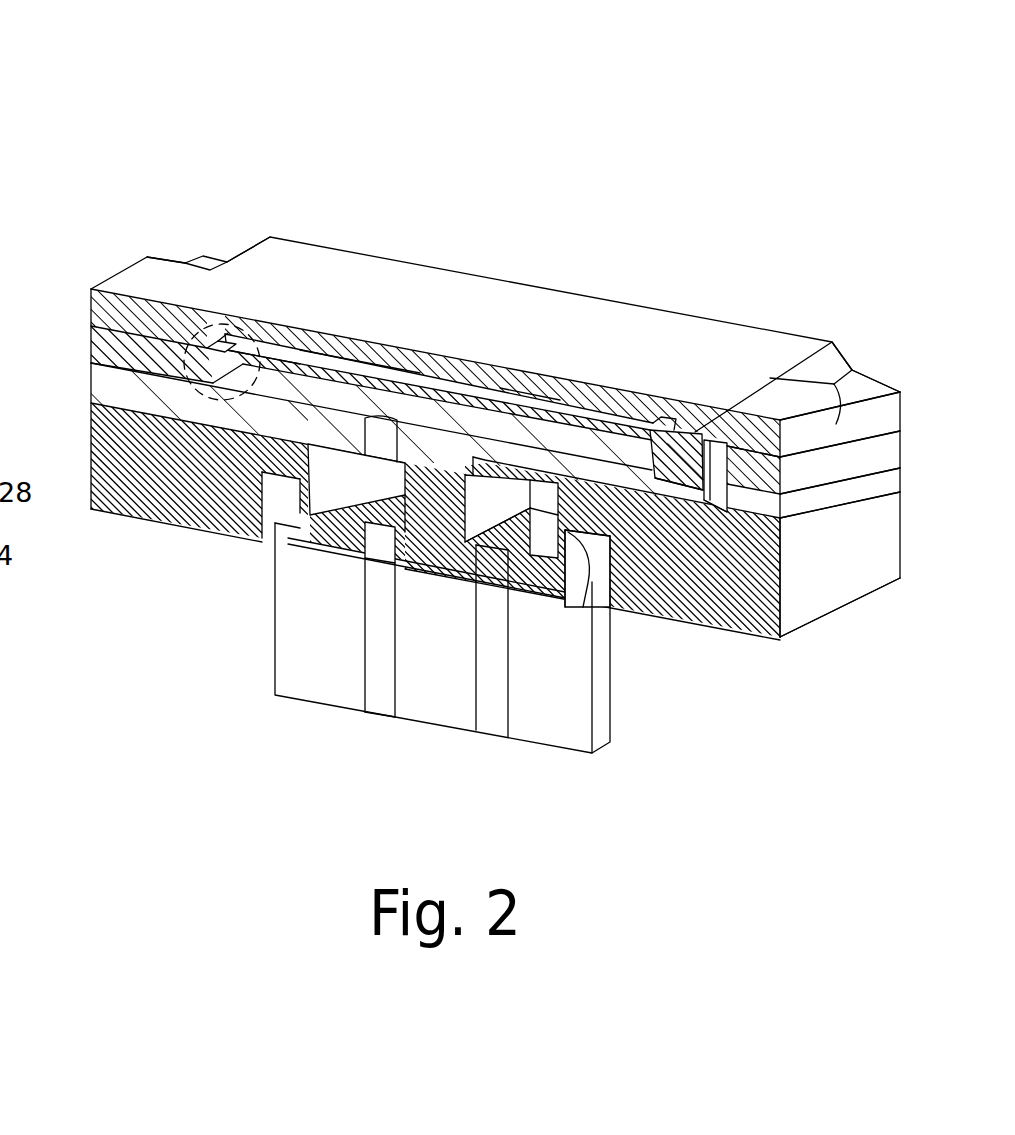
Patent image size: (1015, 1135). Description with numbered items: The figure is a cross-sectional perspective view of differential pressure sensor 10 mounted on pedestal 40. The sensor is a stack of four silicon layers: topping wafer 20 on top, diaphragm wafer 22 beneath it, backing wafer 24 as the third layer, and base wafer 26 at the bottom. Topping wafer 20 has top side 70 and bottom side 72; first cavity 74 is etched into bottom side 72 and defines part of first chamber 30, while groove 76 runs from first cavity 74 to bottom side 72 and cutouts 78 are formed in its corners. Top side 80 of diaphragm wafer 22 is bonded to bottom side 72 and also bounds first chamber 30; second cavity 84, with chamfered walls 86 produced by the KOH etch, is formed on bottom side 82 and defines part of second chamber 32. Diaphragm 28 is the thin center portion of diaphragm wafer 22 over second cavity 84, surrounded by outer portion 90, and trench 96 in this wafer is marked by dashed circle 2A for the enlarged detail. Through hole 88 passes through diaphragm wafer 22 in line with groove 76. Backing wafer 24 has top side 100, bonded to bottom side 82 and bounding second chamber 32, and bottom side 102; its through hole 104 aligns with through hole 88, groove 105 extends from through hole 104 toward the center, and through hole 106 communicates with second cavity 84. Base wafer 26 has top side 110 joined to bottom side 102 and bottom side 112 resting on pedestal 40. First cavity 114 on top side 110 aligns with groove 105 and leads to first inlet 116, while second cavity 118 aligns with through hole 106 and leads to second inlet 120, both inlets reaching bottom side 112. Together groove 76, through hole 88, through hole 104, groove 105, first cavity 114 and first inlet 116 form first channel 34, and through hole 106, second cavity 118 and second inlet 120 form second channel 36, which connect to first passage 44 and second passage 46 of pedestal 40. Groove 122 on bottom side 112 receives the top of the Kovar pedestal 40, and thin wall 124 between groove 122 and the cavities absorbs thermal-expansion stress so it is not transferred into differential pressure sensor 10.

The differential pressure sensor 10 is at (514, 140).
The topping wafer 20 is at (142, 278).
The diaphragm wafer 22 is at (100, 338).
The backing wafer 24 is at (122, 386).
The base wafer 26 is at (140, 483).
The diaphragm 28 is at (558, 393).
The first chamber 30 is at (300, 355).
The second chamber 32 is at (345, 398).
The first channel 34 is at (717, 510).
The second channel 36 is at (378, 428).
The pedestal 40 is at (560, 717).
The first passage 44 is at (490, 692).
The second passage 46 is at (380, 683).
The top side 70 is at (763, 348).
The bottom side 72 is at (875, 440).
The first cavity 74 is at (423, 380).
The groove 76 is at (690, 428).
The cutouts 78 is at (240, 252).
The top side 80 is at (870, 397).
The bottom side 82 is at (848, 482).
The second cavity 84 is at (518, 413).
The chamfered walls 86 is at (772, 378).
The through hole 88 is at (737, 480).
The outer portion 90 is at (162, 372).
The trench 96 is at (240, 340).
The top side 100 is at (886, 452).
The bottom side 102 is at (878, 486).
The through hole 104 is at (740, 480).
The groove 105 is at (677, 510).
The through hole 106 is at (332, 545).
The top side 110 is at (760, 458).
The bottom side 112 is at (884, 592).
The first cavity 114 is at (603, 577).
The first inlet 116 is at (527, 583).
The second cavity 118 is at (352, 555).
The second inlet 120 is at (373, 567).
The groove 122 is at (275, 497).
The thin wall 124 is at (377, 443).
The dashed circle 2A is at (220, 324).